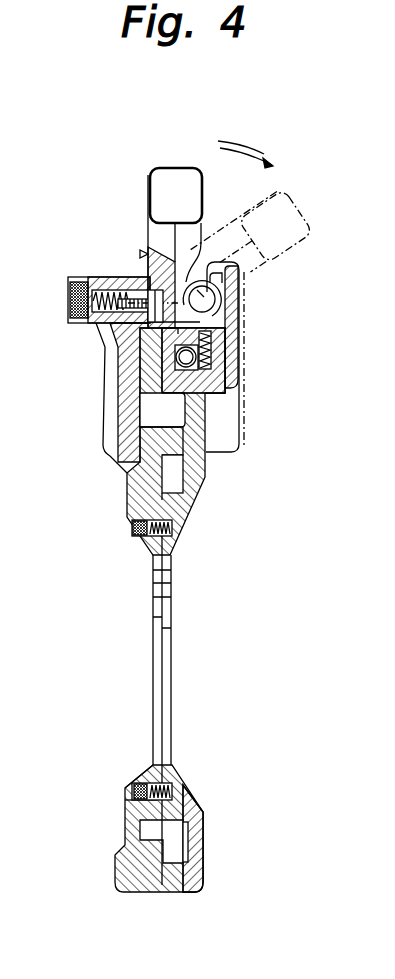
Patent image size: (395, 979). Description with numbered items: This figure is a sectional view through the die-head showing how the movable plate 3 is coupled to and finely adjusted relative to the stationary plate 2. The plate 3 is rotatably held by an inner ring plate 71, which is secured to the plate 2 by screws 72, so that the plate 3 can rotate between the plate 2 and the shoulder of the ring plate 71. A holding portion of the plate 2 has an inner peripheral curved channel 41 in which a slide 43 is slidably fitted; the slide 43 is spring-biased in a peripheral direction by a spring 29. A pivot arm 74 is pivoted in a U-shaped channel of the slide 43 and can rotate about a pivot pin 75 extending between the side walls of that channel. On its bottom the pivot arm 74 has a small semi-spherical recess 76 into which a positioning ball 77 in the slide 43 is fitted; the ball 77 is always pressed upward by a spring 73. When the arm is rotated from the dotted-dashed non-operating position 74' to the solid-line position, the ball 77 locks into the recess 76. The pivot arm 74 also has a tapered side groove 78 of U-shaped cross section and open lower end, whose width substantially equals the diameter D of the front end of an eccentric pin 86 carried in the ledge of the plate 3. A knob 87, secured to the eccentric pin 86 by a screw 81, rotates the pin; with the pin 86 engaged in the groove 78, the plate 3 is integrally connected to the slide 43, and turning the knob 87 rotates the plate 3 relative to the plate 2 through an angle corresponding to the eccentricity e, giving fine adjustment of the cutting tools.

The stationary plate 2 is at (186, 508).
The movable plate 3 is at (112, 456).
The spring 29 is at (176, 352).
The curved channel 41 is at (238, 451).
The slide 43 is at (208, 373).
The inner ring plate 71 is at (147, 778).
The screws 72 is at (172, 527).
The spring 73 is at (210, 386).
The pivot arm 74 is at (145, 217).
The non-operating position of pivot arm 74' is at (276, 241).
The pivot pin 75 is at (240, 283).
The semi-spherical recess 76 is at (222, 318).
The positioning ball 77 is at (226, 352).
The tapered side groove 78 is at (152, 265).
The screw 81 is at (71, 303).
The eccentric pin 86 is at (108, 327).
The knob 87 is at (77, 279).
The diameter of eccentric pin front end D is at (197, 250).
The eccentricity e is at (180, 329).